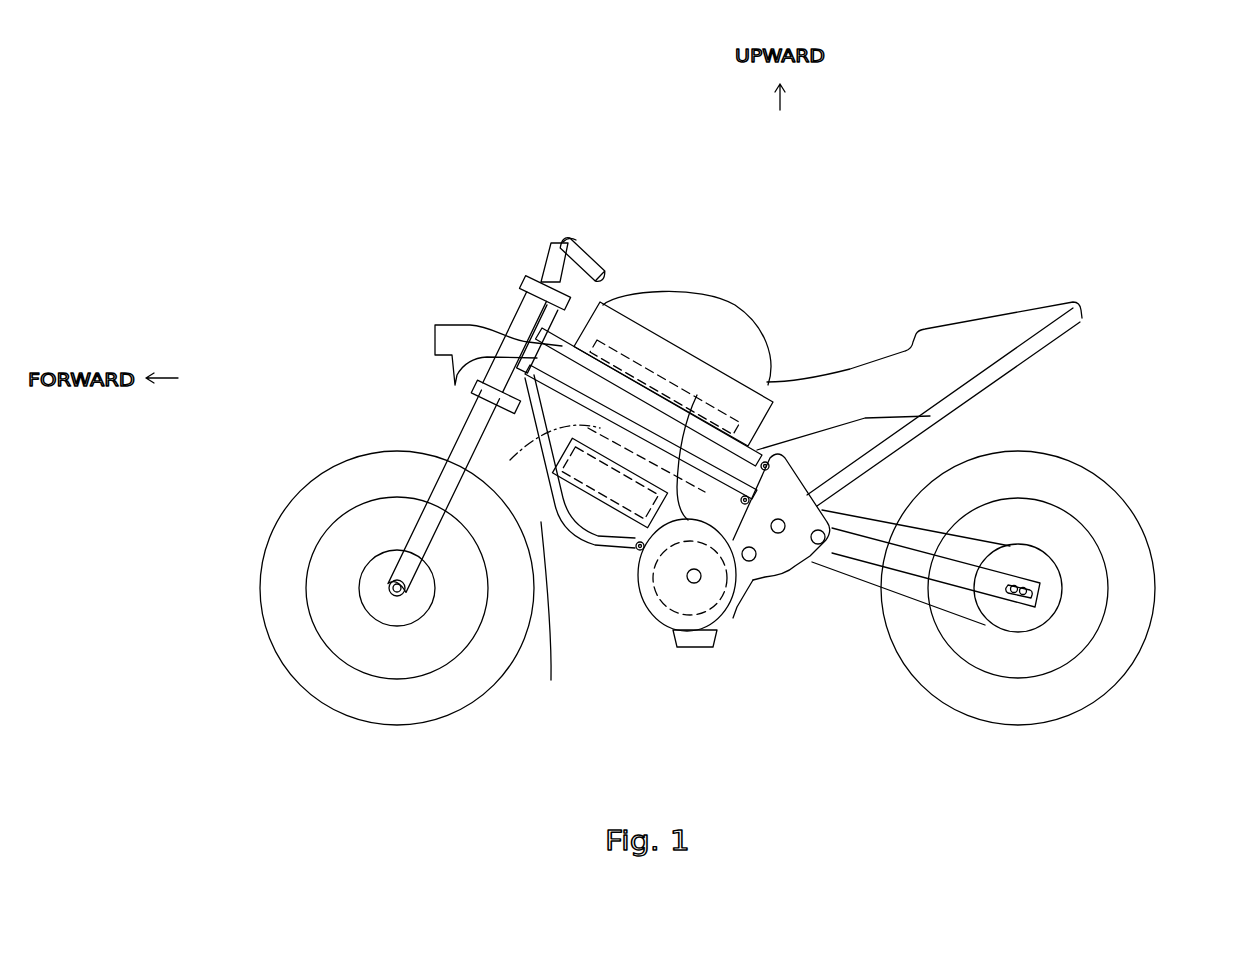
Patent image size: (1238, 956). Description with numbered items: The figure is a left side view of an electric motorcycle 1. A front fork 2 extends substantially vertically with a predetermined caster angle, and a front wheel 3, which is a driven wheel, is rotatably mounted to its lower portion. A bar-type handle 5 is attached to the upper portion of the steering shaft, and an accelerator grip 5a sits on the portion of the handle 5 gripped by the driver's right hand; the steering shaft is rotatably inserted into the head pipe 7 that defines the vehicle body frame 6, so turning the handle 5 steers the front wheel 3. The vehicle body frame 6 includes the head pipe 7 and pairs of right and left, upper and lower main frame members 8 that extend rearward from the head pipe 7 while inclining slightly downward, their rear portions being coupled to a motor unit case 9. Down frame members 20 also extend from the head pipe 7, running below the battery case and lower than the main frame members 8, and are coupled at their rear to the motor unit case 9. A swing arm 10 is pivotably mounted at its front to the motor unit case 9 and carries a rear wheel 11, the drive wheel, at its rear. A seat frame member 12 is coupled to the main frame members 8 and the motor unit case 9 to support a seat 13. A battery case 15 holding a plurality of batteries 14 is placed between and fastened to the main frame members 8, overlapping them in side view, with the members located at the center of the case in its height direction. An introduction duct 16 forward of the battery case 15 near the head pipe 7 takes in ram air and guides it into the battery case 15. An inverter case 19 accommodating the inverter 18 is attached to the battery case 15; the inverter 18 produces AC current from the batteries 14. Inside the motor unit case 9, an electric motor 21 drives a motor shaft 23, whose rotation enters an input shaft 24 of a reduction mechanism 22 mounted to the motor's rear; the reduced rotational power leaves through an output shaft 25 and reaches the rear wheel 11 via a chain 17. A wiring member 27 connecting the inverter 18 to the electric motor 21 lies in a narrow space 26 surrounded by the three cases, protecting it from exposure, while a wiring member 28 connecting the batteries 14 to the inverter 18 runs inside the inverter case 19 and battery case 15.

The electric motorcycle 1 is at (368, 232).
The front fork 2 is at (452, 444).
The front wheel 3 is at (286, 526).
The bar-type handle 5 is at (564, 209).
The accelerator grip 5a is at (597, 257).
The vehicle body frame 6 is at (643, 376).
The head pipe 7 is at (509, 300).
The main frame members 8 is at (697, 395).
The motor unit case 9 is at (658, 630).
The swing arm 10 is at (843, 547).
The rear wheel 11 is at (1142, 523).
The seat frame member 12 is at (885, 446).
The seat 13 is at (950, 332).
The batteries 14 is at (674, 380).
The battery case 15 is at (740, 375).
The introduction duct 16 is at (458, 322).
The chain 17 is at (860, 580).
The inverter 18 is at (590, 492).
The inverter case 19 is at (622, 517).
The down frame members 20 is at (544, 617).
The electric motor 21 is at (746, 622).
The reduction mechanism 22 is at (796, 488).
The motor shaft 23 is at (693, 583).
The input shaft 24 is at (751, 565).
The output shaft 25 is at (778, 535).
The space 26 is at (718, 618).
The wiring member 27 is at (660, 624).
The wiring member 28 is at (538, 440).